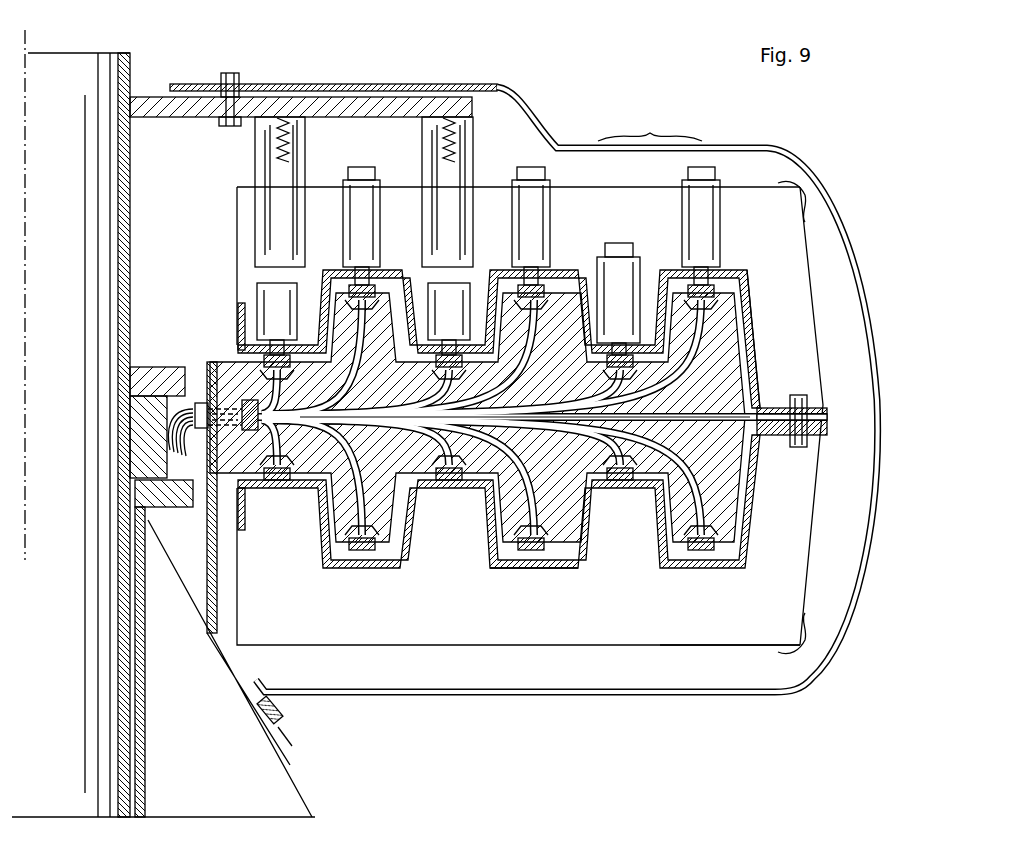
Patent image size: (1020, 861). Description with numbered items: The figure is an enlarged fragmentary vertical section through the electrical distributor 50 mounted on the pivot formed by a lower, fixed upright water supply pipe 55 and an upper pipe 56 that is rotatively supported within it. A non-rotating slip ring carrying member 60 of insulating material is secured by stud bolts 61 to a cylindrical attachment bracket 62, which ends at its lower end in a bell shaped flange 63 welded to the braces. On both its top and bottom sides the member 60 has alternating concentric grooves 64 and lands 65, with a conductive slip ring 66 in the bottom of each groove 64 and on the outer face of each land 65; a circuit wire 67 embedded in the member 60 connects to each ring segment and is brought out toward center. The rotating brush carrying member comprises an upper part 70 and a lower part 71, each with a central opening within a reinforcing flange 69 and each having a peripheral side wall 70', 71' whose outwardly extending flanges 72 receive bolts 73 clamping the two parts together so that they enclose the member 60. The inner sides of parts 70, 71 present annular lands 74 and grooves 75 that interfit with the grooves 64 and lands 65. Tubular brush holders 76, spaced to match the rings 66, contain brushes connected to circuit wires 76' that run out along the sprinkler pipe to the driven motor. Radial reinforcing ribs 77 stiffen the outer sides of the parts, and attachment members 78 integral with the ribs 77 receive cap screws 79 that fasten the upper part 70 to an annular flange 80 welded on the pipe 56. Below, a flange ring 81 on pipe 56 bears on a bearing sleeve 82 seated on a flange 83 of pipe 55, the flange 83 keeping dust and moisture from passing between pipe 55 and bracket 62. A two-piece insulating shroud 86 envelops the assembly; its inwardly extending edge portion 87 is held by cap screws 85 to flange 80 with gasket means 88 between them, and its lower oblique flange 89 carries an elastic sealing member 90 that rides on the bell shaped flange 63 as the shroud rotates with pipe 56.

The apparatus 50 is at (307, 445).
The lower water supply pipe 55 is at (175, 818).
The upper pipe 56 is at (128, 66).
The slip ring carrying member 60 is at (745, 300).
The stud bolts 61 is at (202, 400).
The cylindrical attachment bracket 62 is at (213, 592).
The bell shaped flange 63 is at (233, 672).
The grooves 64 is at (593, 482).
The lands 65 is at (507, 565).
The slip ring 66 is at (538, 568).
The circuit wire 67 is at (413, 442).
The reinforcing flange 69 is at (240, 303).
The upper brush carrying part 70 is at (555, 356).
The peripheral side wall 70' is at (801, 339).
The lower brush carrying part 71 is at (542, 443).
The peripheral side wall 71' is at (801, 416).
The outwardly extending flanges 72 is at (834, 428).
The bolts 73 is at (802, 398).
The annular lands 74 is at (633, 492).
The grooves 75 is at (730, 623).
The tubular brush holders 76 is at (488, 273).
The circuit wire 76' is at (113, 449).
The radial reinforcing ribs 77 is at (808, 240).
The attachment members 78 is at (430, 138).
The cap screw 79 is at (322, 88).
The annular flange 80 is at (150, 98).
The flange ring 81 is at (157, 367).
The bearing sleeve 82 is at (145, 423).
The flange 83 is at (168, 508).
The cap screws 85 is at (226, 126).
The shroud 86 is at (650, 122).
The inwardly extending edge portion 87 is at (390, 84).
The gasket means 88 is at (284, 117).
The oblique flange 89 is at (280, 716).
The sealing member 90 is at (283, 727).